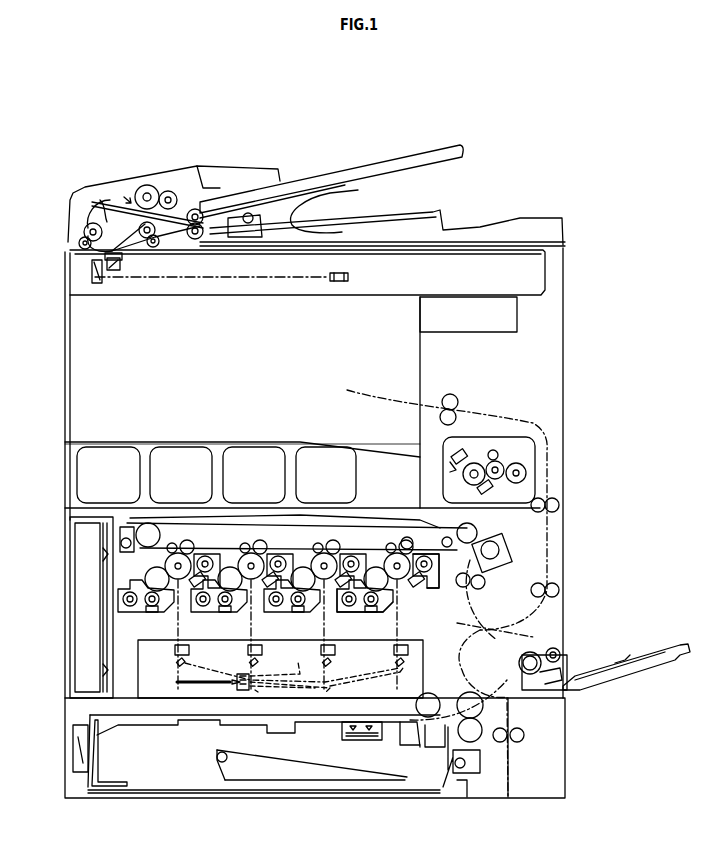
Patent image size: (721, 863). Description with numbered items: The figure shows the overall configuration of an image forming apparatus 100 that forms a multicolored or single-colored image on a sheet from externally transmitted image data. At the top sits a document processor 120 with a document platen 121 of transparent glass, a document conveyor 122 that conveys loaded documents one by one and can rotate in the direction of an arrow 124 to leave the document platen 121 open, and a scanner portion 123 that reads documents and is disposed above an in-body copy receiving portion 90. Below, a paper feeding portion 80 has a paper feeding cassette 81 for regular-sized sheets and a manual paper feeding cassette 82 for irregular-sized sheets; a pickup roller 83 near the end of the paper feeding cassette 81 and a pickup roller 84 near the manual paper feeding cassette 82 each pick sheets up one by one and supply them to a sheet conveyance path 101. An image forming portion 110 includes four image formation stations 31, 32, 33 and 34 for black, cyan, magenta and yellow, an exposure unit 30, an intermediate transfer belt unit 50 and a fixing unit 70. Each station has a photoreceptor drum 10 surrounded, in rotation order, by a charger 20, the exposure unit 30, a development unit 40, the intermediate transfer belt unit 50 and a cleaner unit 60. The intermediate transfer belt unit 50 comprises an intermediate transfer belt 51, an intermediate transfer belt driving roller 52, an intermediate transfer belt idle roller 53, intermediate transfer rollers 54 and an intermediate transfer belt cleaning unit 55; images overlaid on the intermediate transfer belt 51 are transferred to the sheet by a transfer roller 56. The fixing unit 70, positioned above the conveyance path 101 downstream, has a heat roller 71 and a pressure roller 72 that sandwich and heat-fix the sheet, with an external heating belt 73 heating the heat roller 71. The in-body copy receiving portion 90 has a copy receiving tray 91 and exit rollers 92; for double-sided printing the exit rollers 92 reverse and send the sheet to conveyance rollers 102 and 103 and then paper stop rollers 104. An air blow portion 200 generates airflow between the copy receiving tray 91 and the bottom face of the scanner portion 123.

The image forming apparatus 100 is at (540, 146).
The image forming portion 110 is at (127, 653).
The document processor 120 is at (162, 160).
The document platen 121 is at (410, 253).
The document conveyor 122 is at (78, 182).
The scanner portion 123 is at (545, 275).
The arrow 124 is at (320, 117).
The air blow portion 200 is at (523, 315).
The in-body copy receiving portion 90 is at (162, 377).
The copy receiving tray 91 is at (247, 442).
The exit rollers 92 is at (452, 395).
The image formation station 34 is at (188, 530).
The image formation station 33 is at (237, 542).
The image formation station 32 is at (313, 542).
The image formation station 31 is at (380, 490).
The fixing unit 70 is at (548, 454).
The heat roller 71 is at (507, 463).
The pressure roller 72 is at (526, 473).
The external heating belt 73 is at (484, 458).
The conveyance roller 102 is at (560, 505).
The conveyance roller 103 is at (560, 590).
The photoreceptor drum 10 is at (297, 532).
The intermediate transfer belt idle roller 53 is at (155, 528).
The intermediate transfer belt cleaning unit 55 is at (132, 526).
The intermediate transfer belt driving roller 52 is at (484, 528).
The intermediate transfer rollers 54 is at (414, 543).
The transfer roller 56 is at (510, 552).
The paper stop rollers 104 is at (492, 582).
The sheet conveyance path 101 is at (471, 678).
The charger 20 is at (403, 590).
The development unit 40 is at (350, 625).
The cleaner unit 60 is at (423, 588).
The intermediate transfer belt unit 50 is at (378, 512).
The intermediate transfer belt 51 is at (392, 528).
The exposure unit 30 is at (428, 660).
The pickup roller 83 is at (430, 691).
The pickup roller 84 is at (565, 660).
The manual paper feeding cassette 82 is at (625, 655).
The paper feeding portion 80 is at (580, 753).
The paper feeding cassette 81 is at (465, 783).